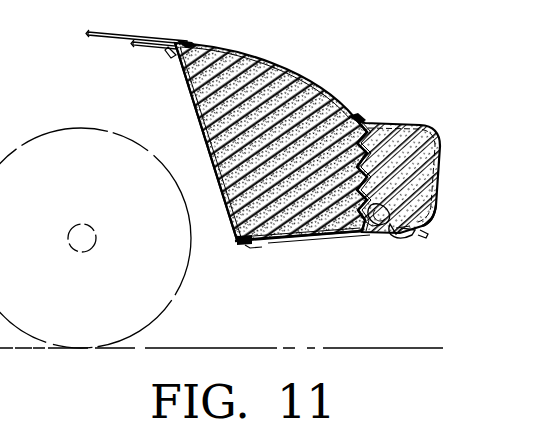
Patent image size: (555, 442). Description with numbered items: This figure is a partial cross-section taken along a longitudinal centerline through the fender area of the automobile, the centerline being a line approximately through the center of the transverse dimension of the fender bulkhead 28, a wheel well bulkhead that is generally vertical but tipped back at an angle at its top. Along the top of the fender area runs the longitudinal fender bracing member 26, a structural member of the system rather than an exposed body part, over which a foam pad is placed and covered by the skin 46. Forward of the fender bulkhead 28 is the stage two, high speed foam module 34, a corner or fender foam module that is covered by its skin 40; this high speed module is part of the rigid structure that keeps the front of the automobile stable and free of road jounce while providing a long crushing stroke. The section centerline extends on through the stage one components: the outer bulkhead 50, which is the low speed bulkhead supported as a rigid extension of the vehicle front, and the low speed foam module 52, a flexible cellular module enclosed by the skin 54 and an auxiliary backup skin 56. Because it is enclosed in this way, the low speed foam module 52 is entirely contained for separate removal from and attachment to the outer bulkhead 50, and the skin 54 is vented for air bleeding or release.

The longitudinal fender bracing member 26 is at (147, 48).
The fender bulkhead 28 is at (186, 97).
The fender high speed foam module 34 is at (262, 60).
The skin 40 is at (312, 243).
The skin 46 is at (112, 33).
The outer bulkhead 50 is at (342, 240).
The low speed foam module 52 is at (400, 143).
The skin 54 is at (440, 207).
The auxiliary backup skin 56 is at (388, 238).